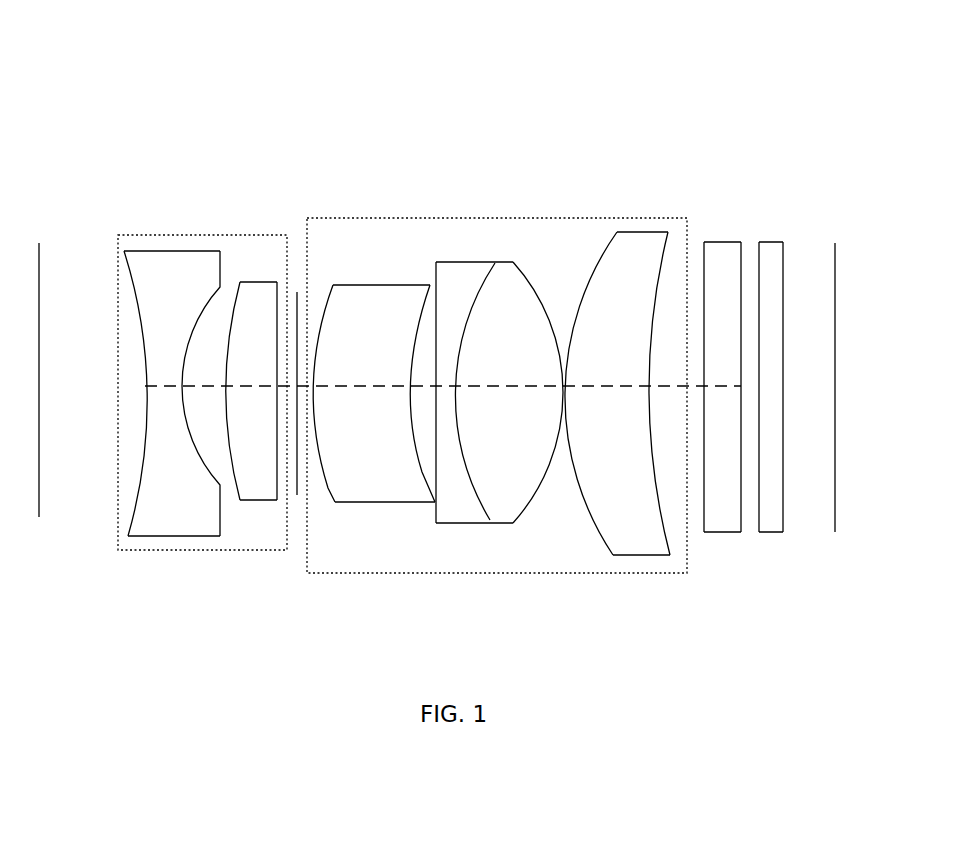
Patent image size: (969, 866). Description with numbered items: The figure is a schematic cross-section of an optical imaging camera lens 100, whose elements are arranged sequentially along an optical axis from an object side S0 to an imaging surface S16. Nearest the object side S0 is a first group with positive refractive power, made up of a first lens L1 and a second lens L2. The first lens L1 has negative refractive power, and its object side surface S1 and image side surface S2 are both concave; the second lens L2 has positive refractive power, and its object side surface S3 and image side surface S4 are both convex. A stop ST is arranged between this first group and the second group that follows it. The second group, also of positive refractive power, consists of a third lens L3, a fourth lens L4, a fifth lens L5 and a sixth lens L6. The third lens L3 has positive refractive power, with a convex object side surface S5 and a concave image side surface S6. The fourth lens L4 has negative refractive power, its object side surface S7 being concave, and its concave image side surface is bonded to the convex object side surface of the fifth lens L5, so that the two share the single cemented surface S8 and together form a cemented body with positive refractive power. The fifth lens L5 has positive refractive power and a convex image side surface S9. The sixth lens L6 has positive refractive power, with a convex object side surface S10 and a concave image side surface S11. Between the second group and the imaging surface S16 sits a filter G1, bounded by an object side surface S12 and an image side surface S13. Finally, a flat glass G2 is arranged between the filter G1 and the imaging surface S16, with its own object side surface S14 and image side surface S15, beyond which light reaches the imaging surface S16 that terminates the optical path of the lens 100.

The optical imaging camera lens 100 is at (147, 31).
The first lens L1 is at (163, 346).
The second lens L2 is at (270, 359).
The third lens L3 is at (376, 383).
The fourth lens L4 is at (469, 362).
The fifth lens L5 is at (532, 362).
The sixth lens L6 is at (642, 377).
The stop ST is at (298, 292).
The filter G1 is at (743, 377).
The flat glass G2 is at (803, 389).
The object side S0 is at (39, 517).
The object side surface of the first lens S1 is at (135, 485).
The image side surface of the first lens S2 is at (203, 478).
The object side surface of the second lens S3 is at (238, 497).
The image side surface of the second lens S4 is at (277, 490).
The object side surface of the third lens S5 is at (330, 490).
The image side surface of the third lens S6 is at (423, 473).
The object side surface of the fourth lens S7 is at (435, 520).
The cemented surface of the fourth and fifth lenses S8 is at (477, 492).
The image side surface of the fifth lens S9 is at (543, 478).
The object side surface of the sixth lens S10 is at (586, 496).
The image side surface of the sixth lens S11 is at (659, 505).
The object side surface of the filter S12 is at (704, 532).
The image side surface of the filter S13 is at (741, 532).
The object side surface of the flat glass S14 is at (760, 532).
The image side surface of the flat glass S15 is at (783, 523).
The imaging surface S16 is at (835, 532).